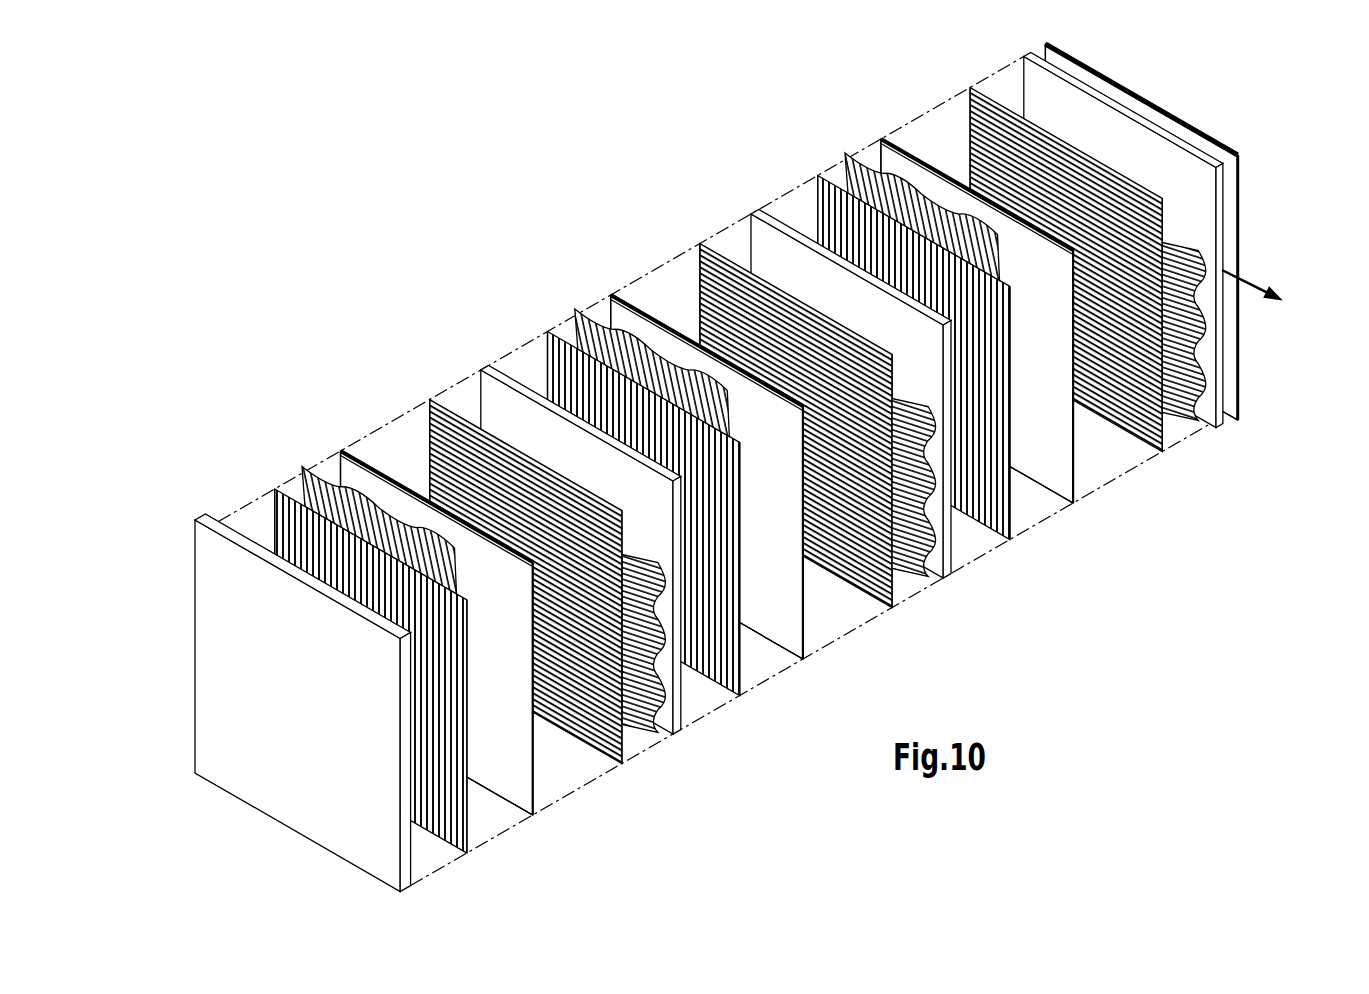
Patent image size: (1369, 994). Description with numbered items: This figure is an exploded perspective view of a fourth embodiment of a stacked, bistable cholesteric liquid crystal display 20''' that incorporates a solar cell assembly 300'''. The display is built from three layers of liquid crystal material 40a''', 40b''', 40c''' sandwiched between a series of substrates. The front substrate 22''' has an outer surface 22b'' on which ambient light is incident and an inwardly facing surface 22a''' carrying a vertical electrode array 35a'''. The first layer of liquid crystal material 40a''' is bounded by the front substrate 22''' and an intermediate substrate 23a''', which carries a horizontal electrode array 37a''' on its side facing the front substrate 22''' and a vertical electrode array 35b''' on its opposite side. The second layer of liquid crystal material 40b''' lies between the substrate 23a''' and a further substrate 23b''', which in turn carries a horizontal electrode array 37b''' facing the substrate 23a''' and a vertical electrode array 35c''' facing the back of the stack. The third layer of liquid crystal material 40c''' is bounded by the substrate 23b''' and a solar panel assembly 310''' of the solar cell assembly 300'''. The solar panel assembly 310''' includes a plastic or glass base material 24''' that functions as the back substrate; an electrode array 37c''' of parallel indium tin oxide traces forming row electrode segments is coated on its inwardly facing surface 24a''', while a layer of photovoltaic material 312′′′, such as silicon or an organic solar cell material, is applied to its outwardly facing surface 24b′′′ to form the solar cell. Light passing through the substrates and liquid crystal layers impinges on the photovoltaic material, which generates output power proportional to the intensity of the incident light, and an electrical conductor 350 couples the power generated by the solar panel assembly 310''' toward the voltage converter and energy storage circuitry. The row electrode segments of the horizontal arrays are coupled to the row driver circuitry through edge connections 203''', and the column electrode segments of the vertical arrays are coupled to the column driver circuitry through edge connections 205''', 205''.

The display 20''' is at (765, 465).
The solar cell assembly 300''' is at (765, 467).
The solar panel assembly 310''' is at (1194, 228).
The layer of photovoltaic material 312′′′ is at (1230, 352).
The electrical conductor 350 is at (1272, 292).
The base material 24''' is at (1177, 240).
The inwardly facing surface of the base material 24a''' is at (1153, 242).
The outwardly facing surface of the base material 24b′′′ is at (1223, 368).
The front substrate 22''' is at (361, 706).
The inwardly facing surface of the front substrate 22a''' is at (468, 766).
The outer surface of the front substrate 22b'' is at (292, 706).
The vertical electrode array 35a''' is at (429, 678).
The vertical electrode array 35b''' is at (685, 535).
The vertical electrode array 35c''' is at (967, 369).
The layer of liquid crystal material 40a''' is at (492, 646).
The layer of liquid crystal material 40b''' is at (762, 500).
The layer of liquid crystal material 40c''' is at (1031, 341).
The horizontal electrode array 37a''' is at (571, 622).
The horizontal electrode array 37b''' is at (811, 457).
The electrode array 37c''' is at (1080, 303).
The substrate 23a''' is at (622, 575).
The substrate 23b''' is at (890, 418).
The edge connections 203''' is at (942, 523).
The edge connections 205''' is at (499, 424).
The edge connections 205'' is at (906, 189).